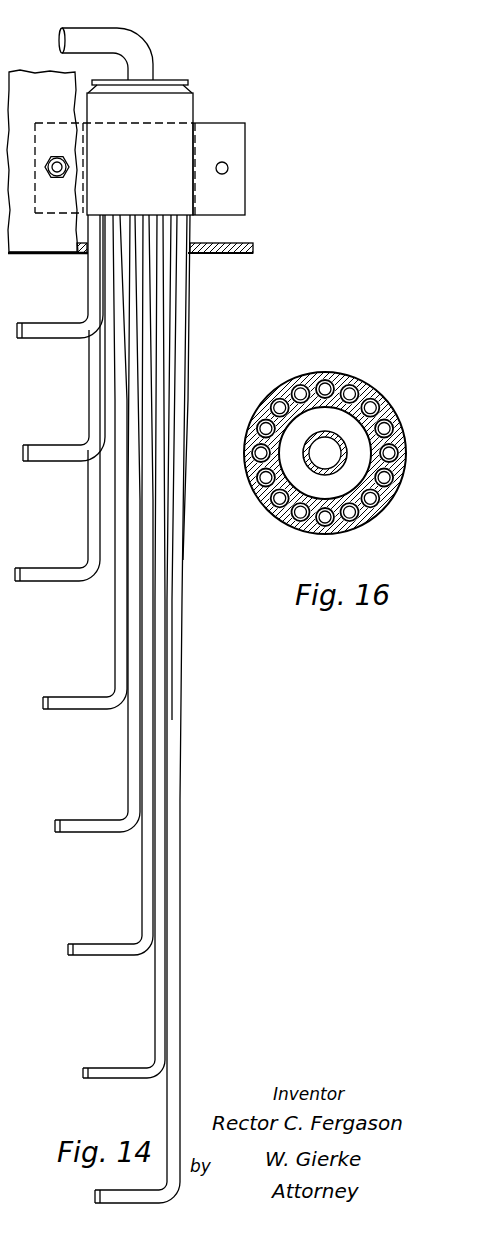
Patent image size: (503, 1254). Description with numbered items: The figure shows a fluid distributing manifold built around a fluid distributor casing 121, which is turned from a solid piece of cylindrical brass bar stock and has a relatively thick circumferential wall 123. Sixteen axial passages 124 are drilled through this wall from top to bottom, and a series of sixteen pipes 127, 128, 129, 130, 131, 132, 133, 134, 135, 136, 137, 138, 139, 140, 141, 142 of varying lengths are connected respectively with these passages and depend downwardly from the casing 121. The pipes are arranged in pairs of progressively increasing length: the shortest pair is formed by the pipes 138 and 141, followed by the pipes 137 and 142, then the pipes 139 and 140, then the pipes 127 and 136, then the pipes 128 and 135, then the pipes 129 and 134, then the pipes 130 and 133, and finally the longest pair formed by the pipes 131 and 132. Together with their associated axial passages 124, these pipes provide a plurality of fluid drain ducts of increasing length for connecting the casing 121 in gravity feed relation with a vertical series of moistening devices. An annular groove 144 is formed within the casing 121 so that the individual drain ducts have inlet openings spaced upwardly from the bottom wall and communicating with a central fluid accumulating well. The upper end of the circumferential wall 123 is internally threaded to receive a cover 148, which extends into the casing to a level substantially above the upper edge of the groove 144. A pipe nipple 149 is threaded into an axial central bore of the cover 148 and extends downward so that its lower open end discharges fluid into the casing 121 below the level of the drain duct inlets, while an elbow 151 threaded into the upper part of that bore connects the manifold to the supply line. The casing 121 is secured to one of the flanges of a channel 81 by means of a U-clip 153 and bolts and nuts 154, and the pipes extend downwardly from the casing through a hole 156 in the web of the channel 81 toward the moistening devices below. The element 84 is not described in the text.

In FIG. 14, the channel 81 is at (33, 252).
In FIG. 14, the header body 84 is at (143, 140).
In FIG. 16, the header body 84 is at (378, 386).
In FIG. 14, the fluid distributor casing 121 is at (192, 115).
In FIG. 16, the fluid distributor casing 121 is at (335, 374).
In FIG. 16, the circumferential wall 123 is at (324, 448).
In FIG. 16, the axial passages 124 is at (357, 479).
In FIG. 16, the pipe 127 is at (251, 453).
In FIG. 16, the pipe 128 is at (256, 428).
In FIG. 16, the pipe 129 is at (270, 410).
In FIG. 16, the pipe 130 is at (303, 384).
In FIG. 16, the pipe 131 is at (325, 380).
In FIG. 14, the pipe 132 is at (167, 1100).
In FIG. 16, the pipe 132 is at (355, 384).
In FIG. 14, the pipe 133 is at (152, 1005).
In FIG. 16, the pipe 133 is at (385, 402).
In FIG. 14, the pipe 134 is at (140, 888).
In FIG. 16, the pipe 134 is at (395, 421).
In FIG. 14, the pipe 135 is at (128, 762).
In FIG. 16, the pipe 135 is at (400, 447).
In FIG. 14, the pipe 136 is at (115, 640).
In FIG. 16, the pipe 136 is at (395, 477).
In FIG. 14, the pipe 137 is at (103, 392).
In FIG. 16, the pipe 137 is at (385, 501).
In FIG. 14, the pipe 138 is at (90, 283).
In FIG. 16, the pipe 138 is at (358, 516).
In FIG. 14, the pipe 139 is at (88, 518).
In FIG. 16, the pipe 139 is at (327, 527).
In FIG. 16, the pipe 140 is at (298, 522).
In FIG. 16, the pipe 141 is at (275, 509).
In FIG. 16, the pipe 142 is at (256, 478).
In FIG. 16, the annular groove 144 is at (303, 435).
In FIG. 14, the cover 148 is at (163, 80).
In FIG. 16, the pipe nipple 149 is at (341, 436).
In FIG. 14, the elbow 151 is at (143, 44).
In FIG. 14, the U-clip 153 is at (242, 143).
In FIG. 14, the bolts and nuts 154 is at (55, 156).
In FIG. 14, the hole 156 is at (193, 253).